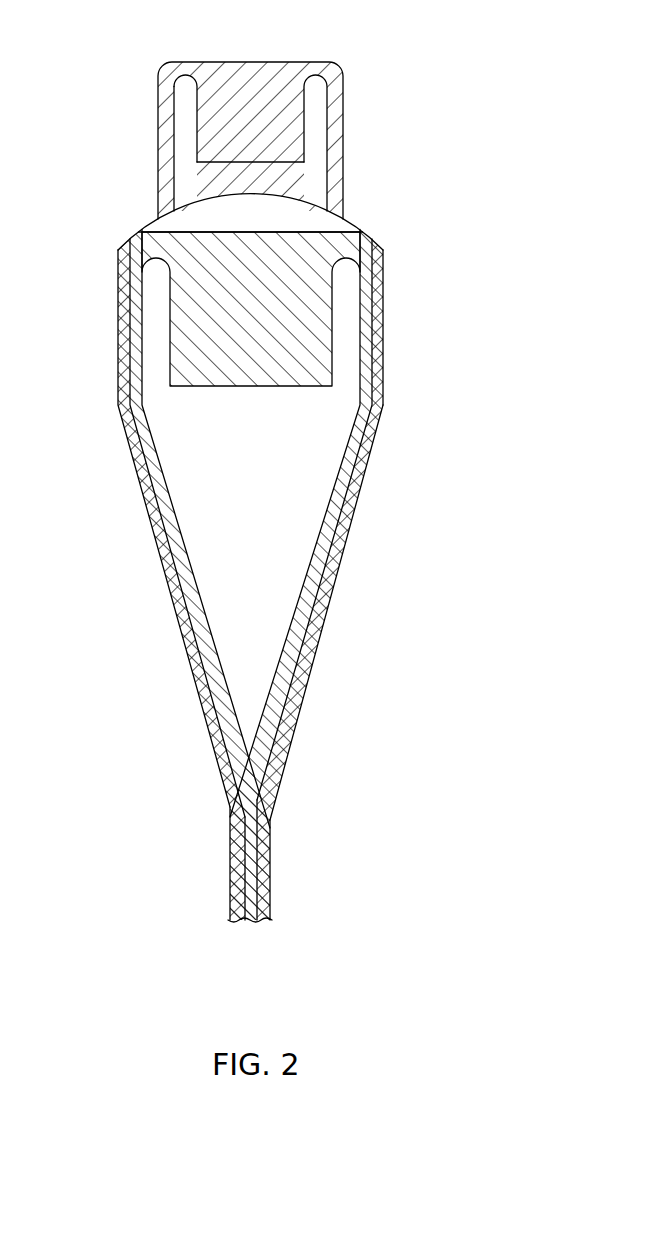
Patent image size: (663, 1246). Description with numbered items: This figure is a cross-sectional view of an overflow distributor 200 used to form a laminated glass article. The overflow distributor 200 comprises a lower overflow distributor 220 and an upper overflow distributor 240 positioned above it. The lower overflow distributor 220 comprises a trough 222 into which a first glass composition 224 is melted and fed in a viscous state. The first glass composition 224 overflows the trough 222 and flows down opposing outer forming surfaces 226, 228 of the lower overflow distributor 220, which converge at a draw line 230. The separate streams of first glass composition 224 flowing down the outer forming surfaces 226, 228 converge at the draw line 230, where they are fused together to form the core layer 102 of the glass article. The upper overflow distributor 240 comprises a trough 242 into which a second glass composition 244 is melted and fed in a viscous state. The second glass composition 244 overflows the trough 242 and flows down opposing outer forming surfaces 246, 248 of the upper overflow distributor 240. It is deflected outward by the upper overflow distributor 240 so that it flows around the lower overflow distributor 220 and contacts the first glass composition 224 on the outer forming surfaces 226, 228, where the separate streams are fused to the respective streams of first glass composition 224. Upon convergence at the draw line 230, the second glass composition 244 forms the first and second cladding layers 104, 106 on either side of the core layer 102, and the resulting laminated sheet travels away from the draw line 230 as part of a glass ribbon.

The overflow distributor 200 is at (404, 116).
The upper overflow distributor 240 is at (343, 93).
The trough 242 is at (197, 125).
The second glass composition 244 is at (248, 70).
The outer forming surface 246 is at (177, 176).
The outer forming surface 248 is at (342, 170).
The first glass composition 224 is at (244, 240).
The lower overflow distributor 220 is at (352, 305).
The trough 222 is at (167, 327).
The outer forming surface 226 is at (155, 462).
The outer forming surface 228 is at (333, 487).
The draw line 230 is at (280, 780).
The core layer 102 is at (247, 818).
The first cladding layer 104 is at (232, 875).
The second cladding layer 106 is at (268, 870).